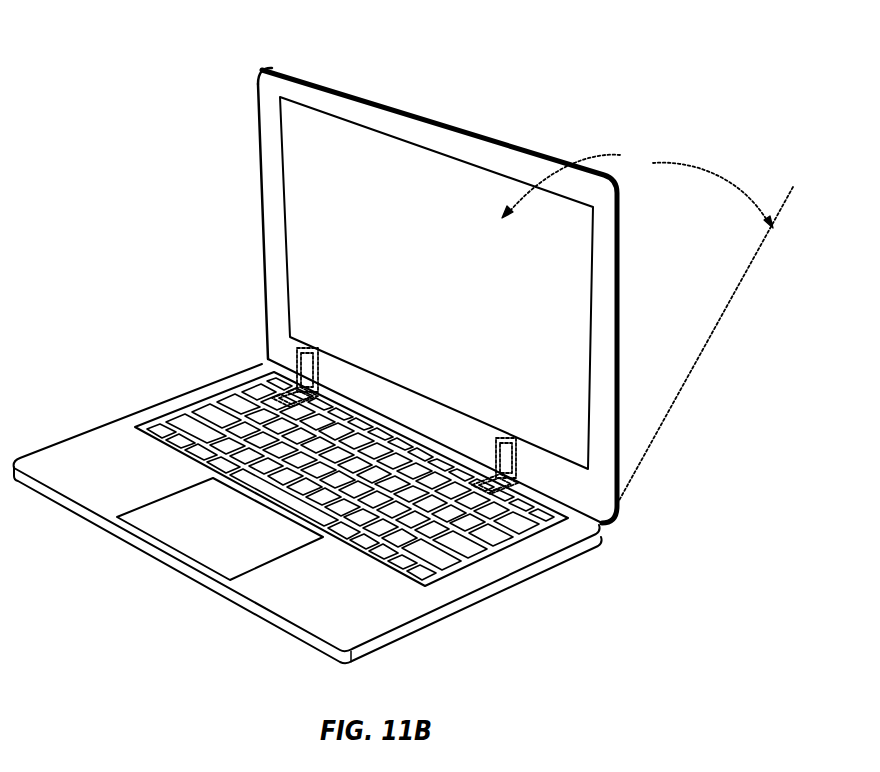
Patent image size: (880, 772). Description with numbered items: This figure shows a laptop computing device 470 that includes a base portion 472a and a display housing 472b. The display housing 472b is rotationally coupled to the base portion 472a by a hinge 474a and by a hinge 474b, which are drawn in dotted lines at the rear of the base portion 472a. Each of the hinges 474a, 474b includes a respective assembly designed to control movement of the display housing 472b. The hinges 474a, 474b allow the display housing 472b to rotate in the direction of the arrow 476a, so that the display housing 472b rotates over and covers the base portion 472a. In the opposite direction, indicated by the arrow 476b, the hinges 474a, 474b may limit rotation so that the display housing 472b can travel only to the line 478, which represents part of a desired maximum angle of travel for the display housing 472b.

The laptop computing device 470 is at (86, 111).
The base portion 472a is at (62, 441).
The display housing 472b is at (262, 217).
The hinge 474a is at (297, 350).
The hinge 474b is at (520, 457).
The arrow 476a is at (578, 155).
The arrow 476b is at (740, 185).
The line 478 is at (700, 362).